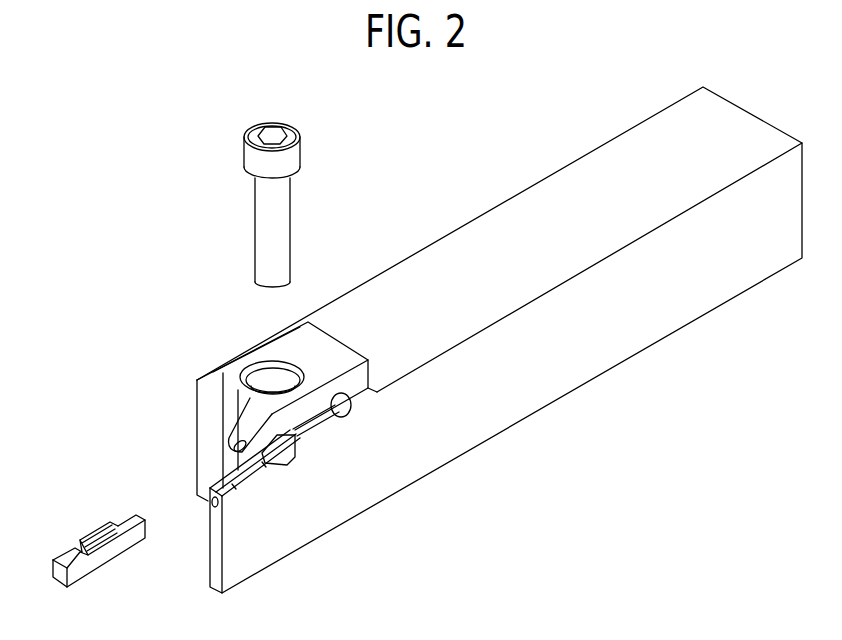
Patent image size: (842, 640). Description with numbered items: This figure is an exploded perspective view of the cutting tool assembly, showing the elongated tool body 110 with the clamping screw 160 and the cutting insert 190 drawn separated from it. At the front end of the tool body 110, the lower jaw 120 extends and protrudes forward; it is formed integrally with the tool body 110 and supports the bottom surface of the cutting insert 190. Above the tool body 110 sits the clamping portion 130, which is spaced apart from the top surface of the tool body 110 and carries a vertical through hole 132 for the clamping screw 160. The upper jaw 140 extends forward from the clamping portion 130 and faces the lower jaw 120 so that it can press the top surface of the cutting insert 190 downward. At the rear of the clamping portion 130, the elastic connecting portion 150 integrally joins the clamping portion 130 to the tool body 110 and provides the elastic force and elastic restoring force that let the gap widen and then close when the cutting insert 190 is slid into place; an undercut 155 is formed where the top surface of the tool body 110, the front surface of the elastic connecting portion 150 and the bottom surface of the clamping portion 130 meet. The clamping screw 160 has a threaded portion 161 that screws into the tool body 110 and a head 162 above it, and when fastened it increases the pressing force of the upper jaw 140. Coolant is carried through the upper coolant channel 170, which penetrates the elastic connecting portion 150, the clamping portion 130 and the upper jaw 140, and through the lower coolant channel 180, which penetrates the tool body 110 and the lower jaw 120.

The tool body 110 is at (535, 197).
The lower jaw 120 is at (257, 495).
The clamping portion 130 is at (300, 344).
The through hole 132 is at (270, 369).
The upper jaw 140 is at (240, 380).
The elastic connecting portion 150 is at (372, 381).
The undercut 155 is at (341, 403).
The clamping screw 160 is at (272, 177).
The threaded portion 161 is at (282, 222).
The head 162 is at (290, 153).
The upper coolant channel 170 is at (228, 442).
The lower coolant channel 180 is at (208, 500).
The cutting insert 190 is at (75, 533).